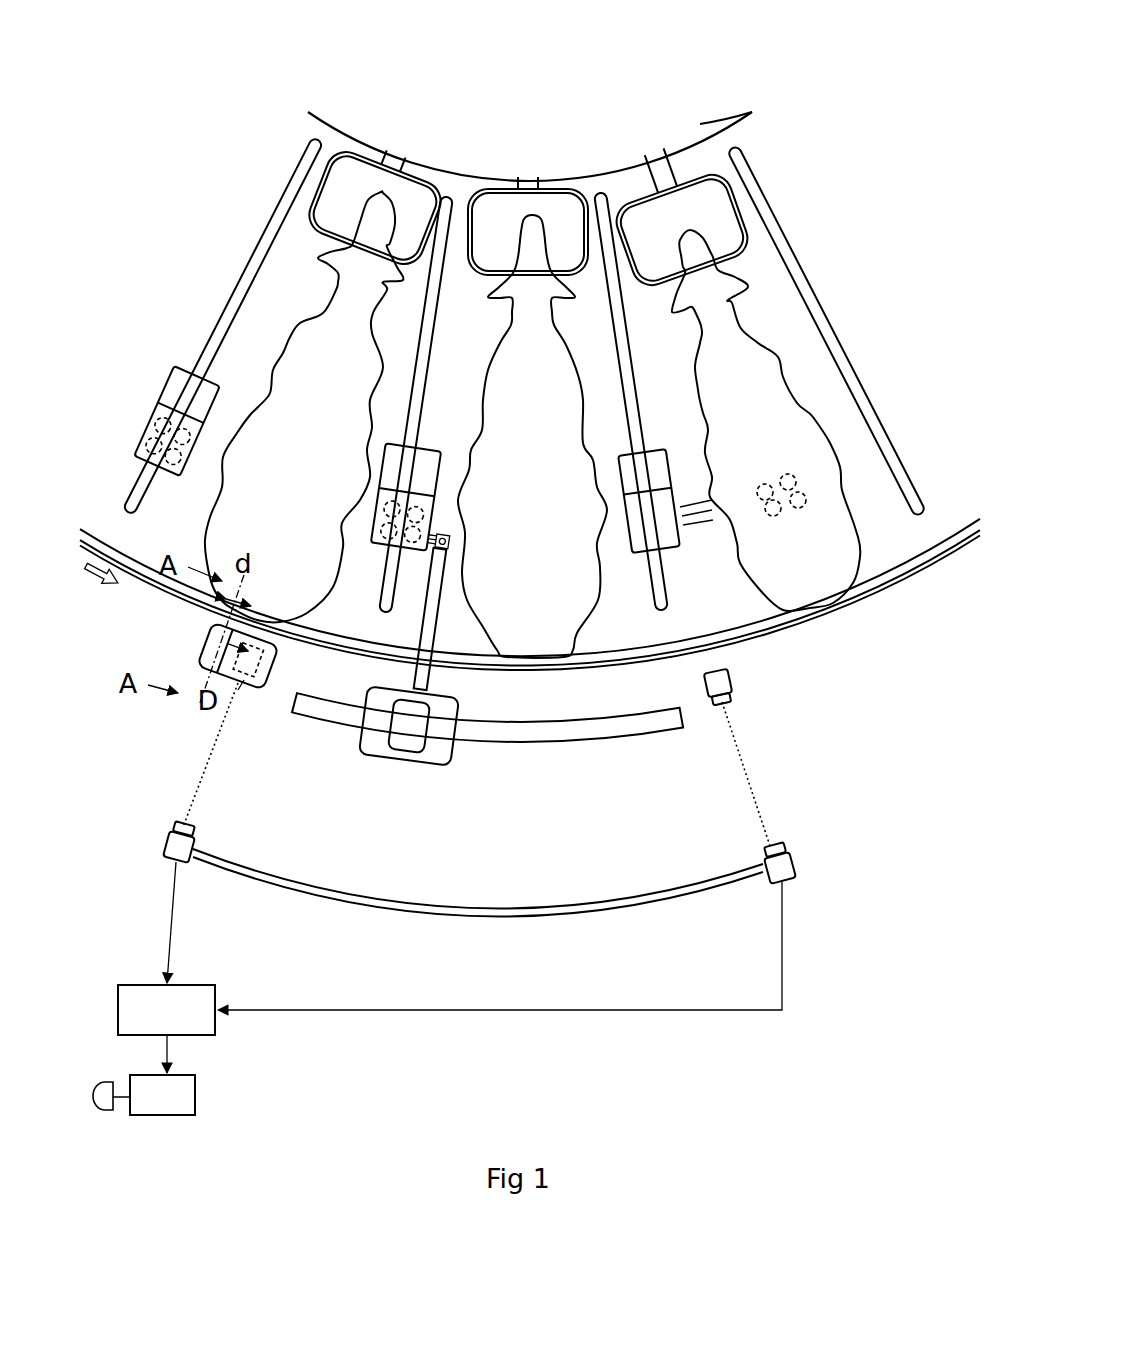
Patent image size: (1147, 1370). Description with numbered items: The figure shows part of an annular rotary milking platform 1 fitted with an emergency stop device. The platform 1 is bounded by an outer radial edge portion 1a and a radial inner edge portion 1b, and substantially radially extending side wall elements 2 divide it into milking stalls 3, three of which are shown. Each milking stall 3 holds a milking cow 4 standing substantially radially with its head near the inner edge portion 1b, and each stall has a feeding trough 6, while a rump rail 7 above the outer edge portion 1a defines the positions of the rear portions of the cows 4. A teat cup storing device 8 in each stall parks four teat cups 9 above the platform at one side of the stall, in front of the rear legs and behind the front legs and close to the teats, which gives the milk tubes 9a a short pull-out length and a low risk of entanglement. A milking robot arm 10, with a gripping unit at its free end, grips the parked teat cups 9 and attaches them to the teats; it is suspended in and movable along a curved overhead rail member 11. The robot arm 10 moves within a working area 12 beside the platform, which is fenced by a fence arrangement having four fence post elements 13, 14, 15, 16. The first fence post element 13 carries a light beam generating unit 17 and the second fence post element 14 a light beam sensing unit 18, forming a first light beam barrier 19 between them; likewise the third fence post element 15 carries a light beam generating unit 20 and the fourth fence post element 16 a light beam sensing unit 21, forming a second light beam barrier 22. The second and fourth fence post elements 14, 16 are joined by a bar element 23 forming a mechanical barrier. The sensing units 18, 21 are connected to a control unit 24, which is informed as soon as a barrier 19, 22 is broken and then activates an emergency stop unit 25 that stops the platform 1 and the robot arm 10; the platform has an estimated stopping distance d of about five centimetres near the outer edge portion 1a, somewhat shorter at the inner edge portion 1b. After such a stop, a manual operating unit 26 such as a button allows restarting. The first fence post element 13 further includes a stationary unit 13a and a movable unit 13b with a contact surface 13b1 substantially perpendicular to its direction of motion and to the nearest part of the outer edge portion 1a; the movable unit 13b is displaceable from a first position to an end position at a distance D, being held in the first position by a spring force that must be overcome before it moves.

The annular rotary platform 1 is at (626, 187).
The outer radial edge portion 1a is at (808, 618).
The radial inner edge portion 1b is at (733, 118).
The side wall elements 2 is at (236, 300).
The milking stalls 3 is at (286, 291).
The milking cow 4 is at (300, 371).
The feeding trough 6 is at (333, 182).
The rump rail 7 is at (835, 601).
The teat cup storing device 8 is at (180, 394).
The teat cups 9 is at (160, 452).
The milk tubes 9a is at (700, 526).
The milking robot arm 10 is at (430, 594).
The overhead rail member 11 is at (540, 729).
The working area 12 is at (450, 841).
The first fence post element 13 is at (253, 648).
The stationary unit 13a is at (256, 657).
The movable unit 13b is at (200, 647).
The contact surface 13b1 is at (214, 642).
The second fence post element 14 is at (170, 842).
The third fence post element 15 is at (727, 683).
The fourth fence post element 16 is at (798, 870).
The light beam generating unit 17 is at (249, 678).
The light beam sensing unit 18 is at (187, 827).
The first light beam barrier 19 is at (200, 778).
The light beam generating unit 20 is at (720, 705).
The light beam sensing unit 21 is at (766, 846).
The second light beam barrier 22 is at (757, 788).
The bar element 23 is at (363, 900).
The control unit 24 is at (136, 1001).
The emergency stop unit 25 is at (172, 1100).
The manual operating unit 26 is at (104, 1104).